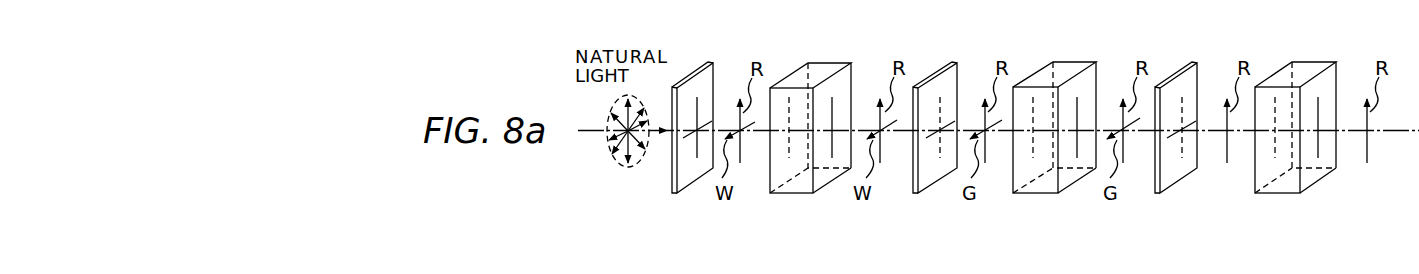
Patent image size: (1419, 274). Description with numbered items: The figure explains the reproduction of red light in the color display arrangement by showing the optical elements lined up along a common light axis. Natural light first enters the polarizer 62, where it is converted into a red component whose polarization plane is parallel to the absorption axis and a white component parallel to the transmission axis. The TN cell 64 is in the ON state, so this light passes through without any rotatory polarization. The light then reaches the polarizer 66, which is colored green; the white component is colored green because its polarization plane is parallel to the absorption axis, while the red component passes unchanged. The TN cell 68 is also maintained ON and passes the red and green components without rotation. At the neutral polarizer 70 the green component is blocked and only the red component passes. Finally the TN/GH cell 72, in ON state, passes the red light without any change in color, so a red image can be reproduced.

The polarizer 62 is at (677, 193).
The TN cell 64 is at (793, 193).
The polarizer 66 is at (918, 193).
The TN cell 68 is at (1037, 193).
The neutral polarizer 70 is at (1160, 193).
The TN/GH cell 72 is at (1278, 193).